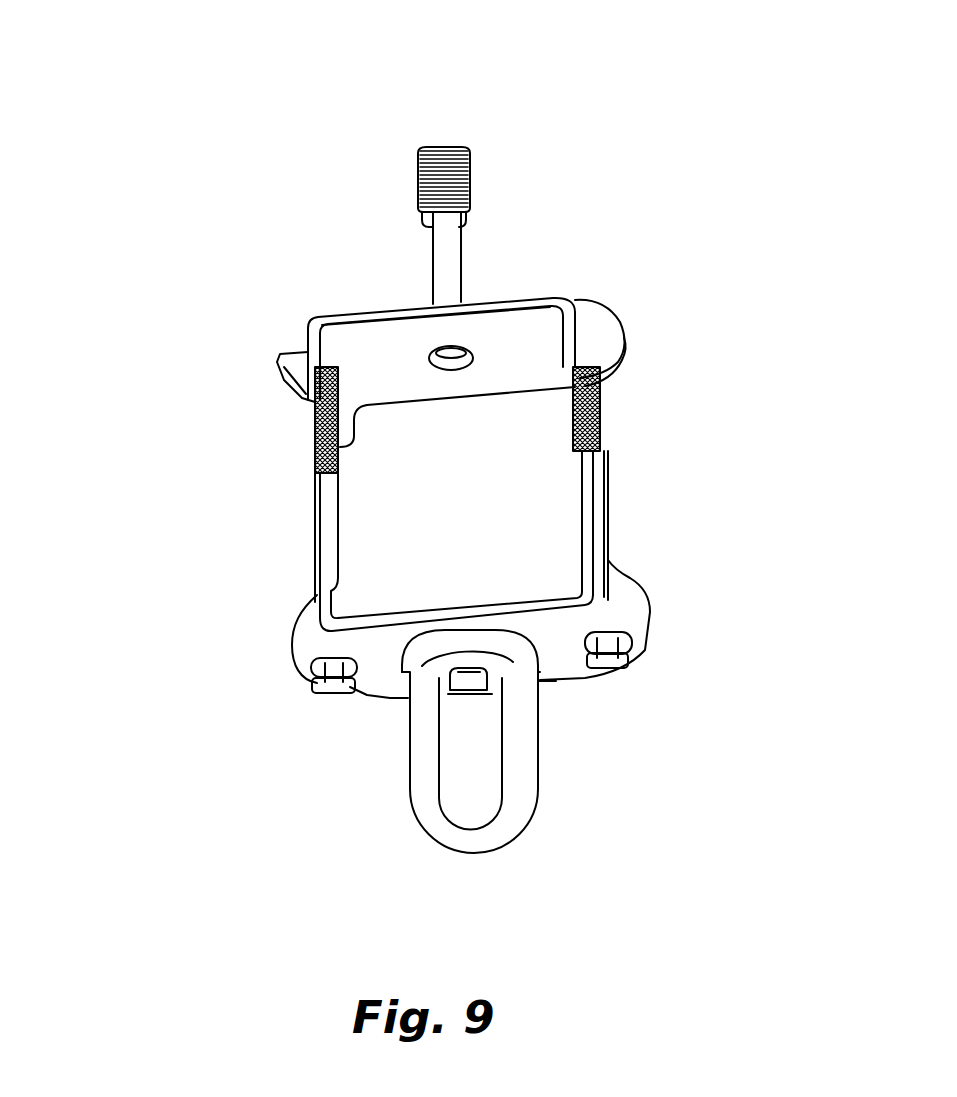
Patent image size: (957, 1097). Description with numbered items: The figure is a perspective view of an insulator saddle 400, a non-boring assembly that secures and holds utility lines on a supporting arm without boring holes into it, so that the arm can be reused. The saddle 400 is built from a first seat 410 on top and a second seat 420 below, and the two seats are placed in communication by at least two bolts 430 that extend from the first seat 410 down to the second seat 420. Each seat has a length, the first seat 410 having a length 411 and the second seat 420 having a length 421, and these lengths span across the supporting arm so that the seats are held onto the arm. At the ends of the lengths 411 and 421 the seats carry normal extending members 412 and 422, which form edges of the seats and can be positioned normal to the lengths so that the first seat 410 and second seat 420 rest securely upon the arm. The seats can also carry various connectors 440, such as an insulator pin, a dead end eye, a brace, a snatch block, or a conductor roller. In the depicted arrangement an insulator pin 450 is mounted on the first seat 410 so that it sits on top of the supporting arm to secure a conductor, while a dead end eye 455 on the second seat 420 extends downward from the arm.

The insulator saddle 400 is at (718, 211).
The first seat 410 is at (506, 340).
The length of the first seat 411 is at (372, 350).
The normal extending members 412 is at (293, 360).
The second seat 420 is at (557, 665).
The length of the second seat 421 is at (545, 627).
The normal extending members 422 is at (307, 653).
The bolts 430 is at (313, 512).
The connectors 440 is at (456, 204).
The insulator pin 450 is at (447, 147).
The dead end eye 455 is at (483, 833).